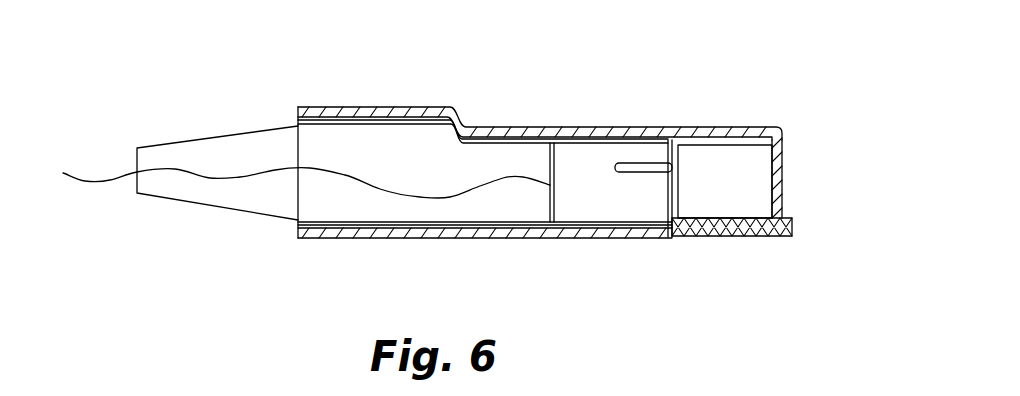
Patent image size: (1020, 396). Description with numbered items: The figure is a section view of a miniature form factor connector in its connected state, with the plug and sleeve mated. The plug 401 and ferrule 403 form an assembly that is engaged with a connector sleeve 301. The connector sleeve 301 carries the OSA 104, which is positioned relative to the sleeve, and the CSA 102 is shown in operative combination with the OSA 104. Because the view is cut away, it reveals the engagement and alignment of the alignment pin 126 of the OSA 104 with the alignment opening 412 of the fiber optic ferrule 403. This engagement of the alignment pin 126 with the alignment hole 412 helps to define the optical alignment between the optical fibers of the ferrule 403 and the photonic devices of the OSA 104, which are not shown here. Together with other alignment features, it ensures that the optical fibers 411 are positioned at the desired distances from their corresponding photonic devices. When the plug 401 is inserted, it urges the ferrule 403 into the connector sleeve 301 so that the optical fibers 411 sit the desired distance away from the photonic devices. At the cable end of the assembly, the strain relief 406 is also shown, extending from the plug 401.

The plug 401 is at (340, 107).
The optical fibers 411 is at (493, 183).
The alignment opening 412 is at (613, 163).
The alignment pin 126 is at (643, 163).
The connector sleeve 301 is at (770, 128).
The OSA 104 is at (755, 173).
The CSA 102 is at (793, 232).
The ferrule 403 is at (573, 205).
The strain relief 406 is at (177, 197).